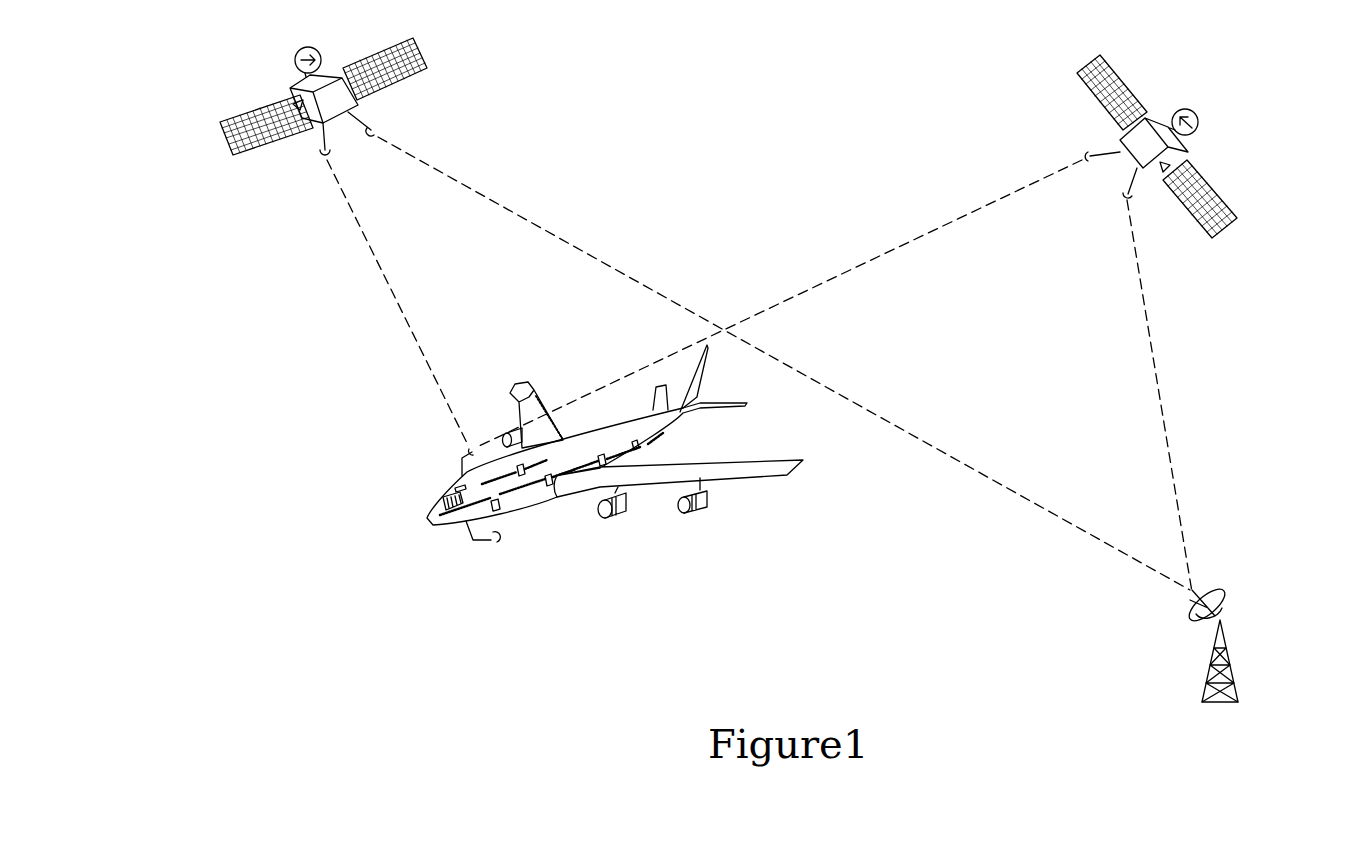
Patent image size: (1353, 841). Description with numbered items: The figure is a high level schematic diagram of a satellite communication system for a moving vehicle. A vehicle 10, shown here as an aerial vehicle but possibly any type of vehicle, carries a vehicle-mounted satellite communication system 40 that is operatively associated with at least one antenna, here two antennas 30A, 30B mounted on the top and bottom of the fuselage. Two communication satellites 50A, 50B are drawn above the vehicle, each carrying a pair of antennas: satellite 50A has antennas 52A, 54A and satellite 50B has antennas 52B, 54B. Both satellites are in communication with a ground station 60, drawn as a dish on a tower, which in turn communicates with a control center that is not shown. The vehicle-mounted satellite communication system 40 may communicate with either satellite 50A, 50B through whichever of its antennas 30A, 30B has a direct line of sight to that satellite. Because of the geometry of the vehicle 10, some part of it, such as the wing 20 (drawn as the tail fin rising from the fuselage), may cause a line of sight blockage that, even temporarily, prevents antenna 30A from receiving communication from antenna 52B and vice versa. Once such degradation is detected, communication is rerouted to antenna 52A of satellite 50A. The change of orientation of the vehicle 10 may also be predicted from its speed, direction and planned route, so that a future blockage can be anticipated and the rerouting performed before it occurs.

The vehicle 10 is at (668, 478).
The wing 20 is at (517, 385).
The antenna 30A is at (466, 452).
The antenna 30B is at (493, 545).
The vehicle-mounted satellite communication system 40 is at (436, 511).
The communication satellite 50A is at (292, 86).
The communication satellite 50B is at (1198, 108).
The antenna 52A is at (319, 157).
The antenna 54A is at (379, 130).
The antenna 52B is at (1084, 152).
The antenna 54B is at (1121, 199).
The ground station 60 is at (1222, 588).